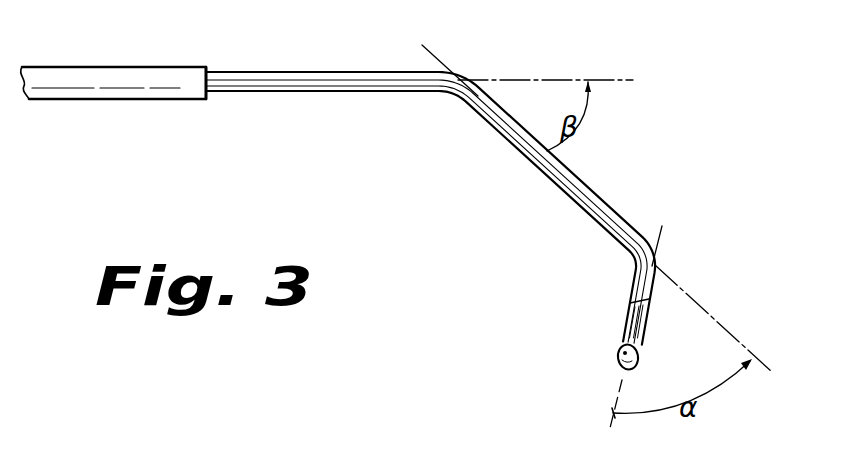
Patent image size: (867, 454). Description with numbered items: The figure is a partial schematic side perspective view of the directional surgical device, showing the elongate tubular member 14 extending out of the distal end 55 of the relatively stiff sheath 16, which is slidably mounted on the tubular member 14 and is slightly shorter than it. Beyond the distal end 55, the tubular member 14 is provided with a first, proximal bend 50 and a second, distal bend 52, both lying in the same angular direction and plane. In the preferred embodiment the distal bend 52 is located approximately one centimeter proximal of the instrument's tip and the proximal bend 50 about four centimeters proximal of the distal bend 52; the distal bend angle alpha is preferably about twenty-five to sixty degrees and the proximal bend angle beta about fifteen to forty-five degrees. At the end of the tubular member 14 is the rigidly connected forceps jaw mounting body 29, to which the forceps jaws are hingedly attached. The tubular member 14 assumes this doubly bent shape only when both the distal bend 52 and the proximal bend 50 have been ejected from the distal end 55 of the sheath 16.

The sheath 16 is at (103, 70).
The tubular member 14 is at (288, 73).
The distal end of the sheath 55 is at (207, 69).
The proximal bend 50 is at (458, 80).
The distal bend 52 is at (656, 263).
The forceps jaw mounting body 29 is at (624, 330).